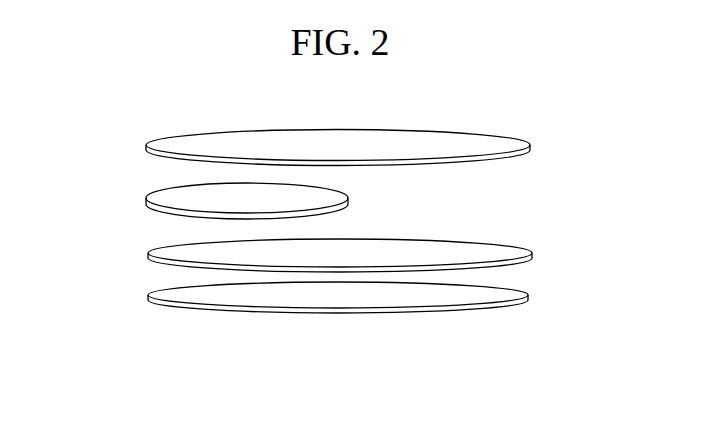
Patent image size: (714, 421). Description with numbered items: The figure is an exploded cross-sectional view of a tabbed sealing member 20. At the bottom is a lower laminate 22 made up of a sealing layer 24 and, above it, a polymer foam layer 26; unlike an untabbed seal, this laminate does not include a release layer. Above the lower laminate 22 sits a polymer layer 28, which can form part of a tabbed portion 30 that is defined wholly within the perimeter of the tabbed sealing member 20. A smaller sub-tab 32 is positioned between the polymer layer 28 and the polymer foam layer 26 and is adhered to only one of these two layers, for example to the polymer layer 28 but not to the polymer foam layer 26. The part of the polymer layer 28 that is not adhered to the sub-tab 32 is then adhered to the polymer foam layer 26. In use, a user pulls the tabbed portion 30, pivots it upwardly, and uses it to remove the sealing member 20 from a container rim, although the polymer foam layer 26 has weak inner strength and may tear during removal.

The tabbed sealing member 20 is at (108, 131).
The lower laminate 22 is at (132, 236).
The sealing layer 24 is at (528, 296).
The polymer foam layer 26 is at (532, 254).
The polymer layer 28 is at (530, 147).
The tabbed portion 30 is at (149, 121).
The sub-tab 32 is at (146, 203).